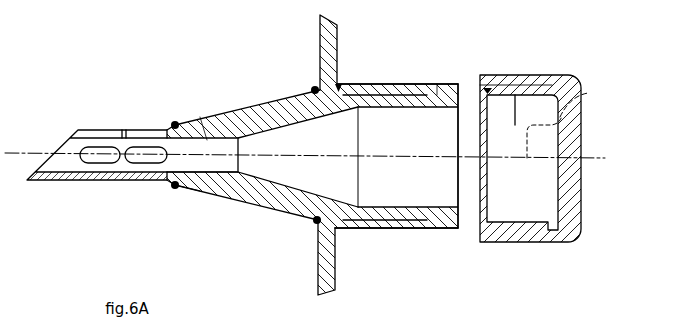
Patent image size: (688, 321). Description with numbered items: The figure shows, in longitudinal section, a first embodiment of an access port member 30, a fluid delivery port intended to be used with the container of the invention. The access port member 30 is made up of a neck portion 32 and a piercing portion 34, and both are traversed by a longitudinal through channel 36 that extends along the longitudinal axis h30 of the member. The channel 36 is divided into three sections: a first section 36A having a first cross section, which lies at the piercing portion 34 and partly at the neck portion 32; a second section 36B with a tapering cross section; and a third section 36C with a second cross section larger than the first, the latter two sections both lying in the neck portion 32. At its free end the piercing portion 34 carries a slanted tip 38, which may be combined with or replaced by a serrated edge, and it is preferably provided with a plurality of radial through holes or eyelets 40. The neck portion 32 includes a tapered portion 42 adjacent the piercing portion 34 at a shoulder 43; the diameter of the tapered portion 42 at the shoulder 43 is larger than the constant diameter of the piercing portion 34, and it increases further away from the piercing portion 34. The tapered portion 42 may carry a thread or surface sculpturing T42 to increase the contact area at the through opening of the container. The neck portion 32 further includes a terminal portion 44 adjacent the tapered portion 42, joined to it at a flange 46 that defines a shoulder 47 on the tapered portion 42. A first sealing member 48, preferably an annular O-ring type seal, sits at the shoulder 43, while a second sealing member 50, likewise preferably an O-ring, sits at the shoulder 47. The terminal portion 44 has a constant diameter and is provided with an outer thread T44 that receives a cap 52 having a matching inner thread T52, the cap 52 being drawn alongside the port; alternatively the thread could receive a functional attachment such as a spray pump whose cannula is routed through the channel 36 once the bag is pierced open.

The access port member 30 is at (393, 68).
The neck portion 32 is at (339, 90).
The piercing portion 34 is at (125, 130).
The longitudinal through channel 36 is at (377, 142).
The first section of the channel 36A is at (182, 120).
The second section of the channel 36B is at (308, 144).
The third section of the channel 36C is at (405, 144).
The slanted tip 38 is at (63, 135).
The radial through holes or eyelets 40 is at (103, 130).
The tapered portion 42 is at (240, 205).
The shoulder 43 is at (198, 191).
The terminal portion 44 is at (413, 230).
The flange 46 is at (337, 267).
The shoulder 47 is at (315, 225).
The first sealing member 48 is at (172, 188).
The second sealing member 50 is at (312, 87).
The cap 52 is at (520, 244).
The thread or surface sculpturing T42 is at (200, 117).
The outer thread T44 is at (437, 84).
The inner thread T52 is at (515, 125).
The longitudinal axis h30 is at (588, 93).